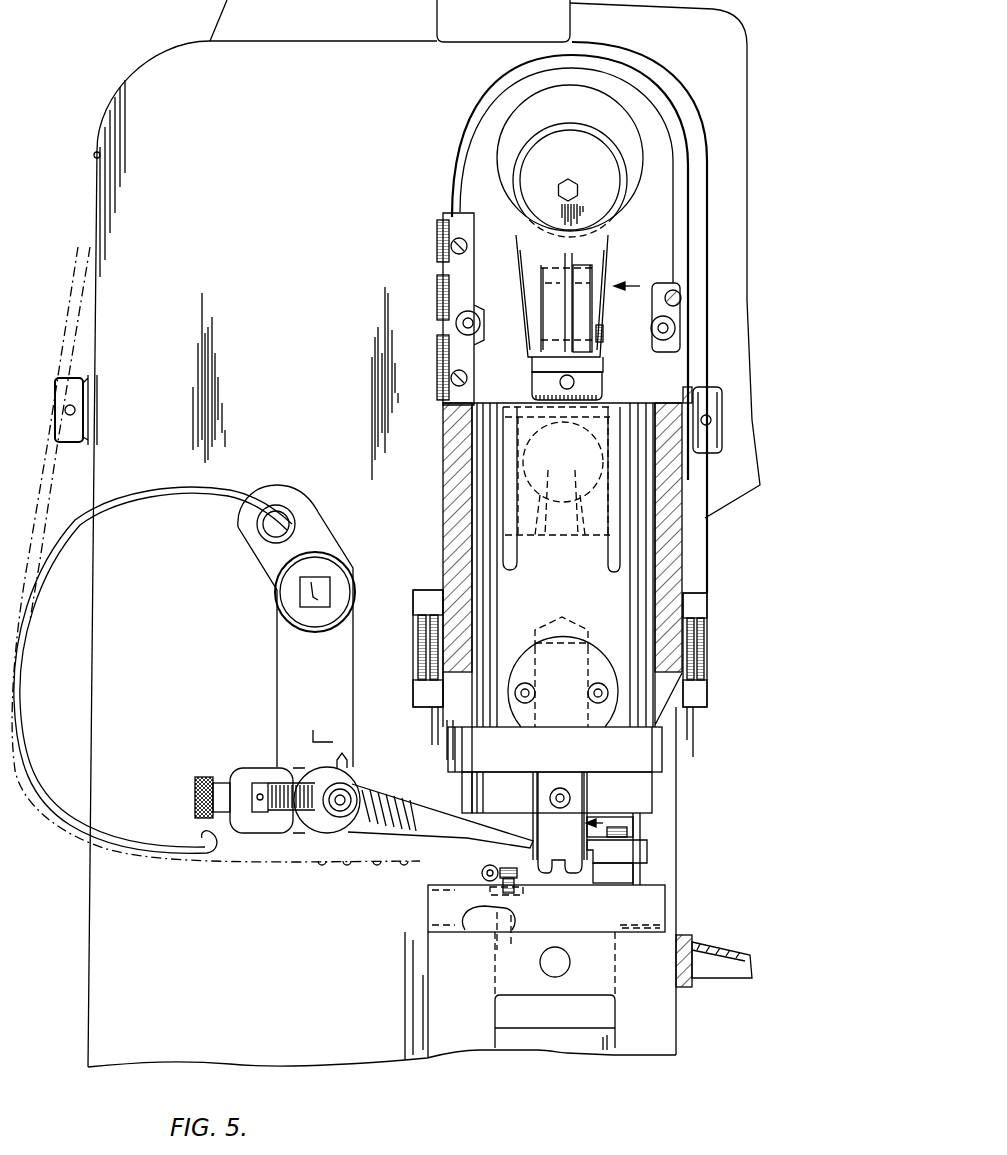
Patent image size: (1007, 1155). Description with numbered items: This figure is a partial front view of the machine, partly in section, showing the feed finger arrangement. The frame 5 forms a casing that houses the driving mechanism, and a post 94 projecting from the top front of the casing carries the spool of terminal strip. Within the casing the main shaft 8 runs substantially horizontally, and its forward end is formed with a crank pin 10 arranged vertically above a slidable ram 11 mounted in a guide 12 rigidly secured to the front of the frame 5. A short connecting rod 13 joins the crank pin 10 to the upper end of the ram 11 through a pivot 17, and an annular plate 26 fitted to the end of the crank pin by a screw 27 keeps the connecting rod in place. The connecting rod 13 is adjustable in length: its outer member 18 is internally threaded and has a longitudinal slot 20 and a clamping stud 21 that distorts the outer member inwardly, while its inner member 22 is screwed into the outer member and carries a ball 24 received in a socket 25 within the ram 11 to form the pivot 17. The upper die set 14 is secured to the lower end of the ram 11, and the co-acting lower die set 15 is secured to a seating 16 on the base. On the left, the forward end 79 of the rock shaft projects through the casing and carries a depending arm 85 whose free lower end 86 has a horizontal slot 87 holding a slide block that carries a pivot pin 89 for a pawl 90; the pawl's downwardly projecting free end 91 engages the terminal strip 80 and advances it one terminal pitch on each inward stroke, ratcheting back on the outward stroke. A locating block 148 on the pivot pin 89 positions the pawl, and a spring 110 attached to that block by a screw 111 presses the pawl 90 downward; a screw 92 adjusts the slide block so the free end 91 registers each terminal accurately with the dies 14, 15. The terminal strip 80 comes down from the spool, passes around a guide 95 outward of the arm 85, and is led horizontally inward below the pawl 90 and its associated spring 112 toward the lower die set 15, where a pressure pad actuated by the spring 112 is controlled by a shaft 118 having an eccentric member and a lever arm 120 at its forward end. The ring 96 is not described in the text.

The frame 5 is at (295, 193).
The post 94 is at (457, 8).
The main shaft 8 is at (528, 114).
The crank pin 10 is at (627, 170).
The annular plate 26 is at (530, 171).
The screw 27 is at (558, 190).
The longitudinal slot 20 is at (572, 262).
The connecting rod 13 is at (682, 284).
The outer member 18 is at (607, 305).
The clamping stud 21 is at (602, 338).
The inner member 22 is at (590, 385).
The pivot 17 is at (512, 439).
The guide 12 is at (455, 478).
The slidable ram 11 is at (488, 532).
The ball 24 is at (523, 489).
The socket 25 is at (564, 520).
The forward end of the rock shaft 79 is at (333, 587).
The terminal strip 80 is at (43, 522).
The depending arm 85 is at (295, 640).
The guide 95 is at (147, 497).
The pivot ring 96 is at (257, 523).
The spring 110 is at (280, 786).
The screw 111 is at (325, 762).
The locating block 148 is at (340, 780).
The pivot pin 89 is at (350, 792).
The screw 92 is at (273, 767).
The pawl 90 is at (420, 815).
The free end of the pawl 91 is at (547, 848).
The upper die set 14 is at (605, 822).
The free lower end 86 is at (262, 822).
The horizontal slot 87 is at (285, 813).
The seating 16 is at (620, 927).
The spring 112 is at (518, 902).
The lower die set 15 is at (572, 907).
The lever arm 120 is at (477, 924).
The shaft 118 is at (510, 944).